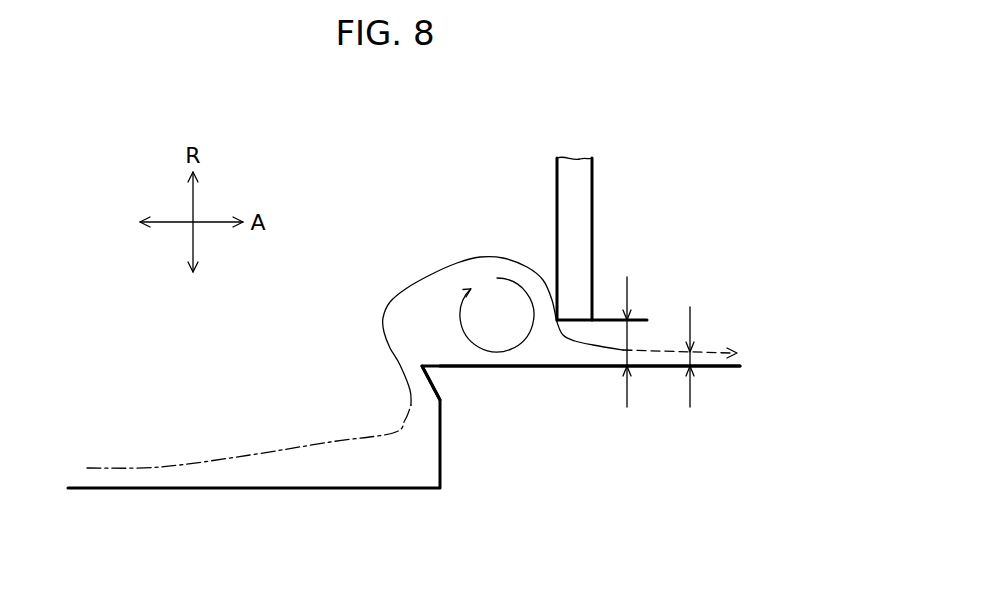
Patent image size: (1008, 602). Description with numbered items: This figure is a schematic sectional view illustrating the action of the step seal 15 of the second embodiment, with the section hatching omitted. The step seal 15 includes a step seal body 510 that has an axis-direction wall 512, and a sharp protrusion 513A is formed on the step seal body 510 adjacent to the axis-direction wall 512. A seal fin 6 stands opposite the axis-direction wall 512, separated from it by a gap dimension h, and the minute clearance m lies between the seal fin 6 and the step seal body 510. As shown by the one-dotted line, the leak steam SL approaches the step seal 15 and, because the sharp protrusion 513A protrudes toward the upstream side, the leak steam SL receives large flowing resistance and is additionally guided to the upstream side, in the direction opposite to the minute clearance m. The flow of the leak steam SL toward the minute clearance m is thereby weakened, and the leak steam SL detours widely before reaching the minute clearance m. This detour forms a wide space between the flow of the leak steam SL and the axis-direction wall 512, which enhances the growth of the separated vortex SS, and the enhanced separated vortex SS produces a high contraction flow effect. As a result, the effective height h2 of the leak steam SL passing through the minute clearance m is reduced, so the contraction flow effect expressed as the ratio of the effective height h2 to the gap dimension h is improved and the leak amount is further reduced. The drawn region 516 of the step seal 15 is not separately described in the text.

The seal fin 6 is at (587, 183).
The step seal 15 is at (690, 206).
The step seal body 510 is at (570, 477).
The axis-direction wall 512 is at (520, 366).
The sharp protrusion 513A is at (437, 380).
The protrusion 516 is at (427, 380).
The separated vortex SS is at (465, 327).
The leak steam SL is at (148, 468).
The minute clearance m is at (586, 335).
The gap dimension h is at (635, 341).
The effective height h2 is at (706, 357).